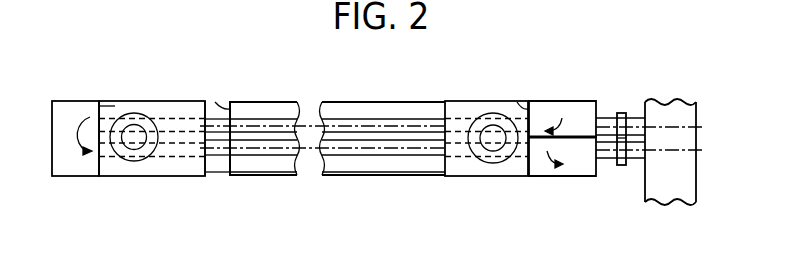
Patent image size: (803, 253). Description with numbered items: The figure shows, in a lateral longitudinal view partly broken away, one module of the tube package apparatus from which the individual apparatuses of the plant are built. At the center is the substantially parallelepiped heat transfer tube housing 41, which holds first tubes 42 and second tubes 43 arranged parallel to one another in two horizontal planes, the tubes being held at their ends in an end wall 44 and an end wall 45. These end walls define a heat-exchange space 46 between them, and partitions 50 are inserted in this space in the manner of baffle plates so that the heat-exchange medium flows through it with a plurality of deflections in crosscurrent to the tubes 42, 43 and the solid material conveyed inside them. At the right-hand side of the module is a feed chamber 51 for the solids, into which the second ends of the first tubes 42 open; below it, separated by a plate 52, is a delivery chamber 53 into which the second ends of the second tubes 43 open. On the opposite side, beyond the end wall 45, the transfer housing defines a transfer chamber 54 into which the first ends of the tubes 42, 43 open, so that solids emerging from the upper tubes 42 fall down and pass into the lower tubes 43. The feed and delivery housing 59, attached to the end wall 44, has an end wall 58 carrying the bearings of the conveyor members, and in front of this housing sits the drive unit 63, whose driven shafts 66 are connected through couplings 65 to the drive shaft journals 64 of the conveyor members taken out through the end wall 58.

The heat transfer tube housing 41 is at (260, 96).
The first tubes 42 is at (368, 126).
The second tubes 43 is at (367, 148).
The end wall 44 is at (518, 106).
The end wall 45 is at (115, 106).
The heat-exchange space 46 is at (262, 163).
The partitions 50 is at (218, 102).
The feed chamber 51 is at (543, 112).
The plate 52 is at (575, 136).
The delivery chamber 53 is at (577, 165).
The transfer chamber 54 is at (75, 107).
The end wall 58 is at (608, 203).
The feed and delivery housing 59 is at (544, 184).
The drive unit 63 is at (668, 94).
The drive shaft journals 64 is at (607, 118).
The couplings 65 is at (623, 113).
The driven shafts 66 is at (636, 118).